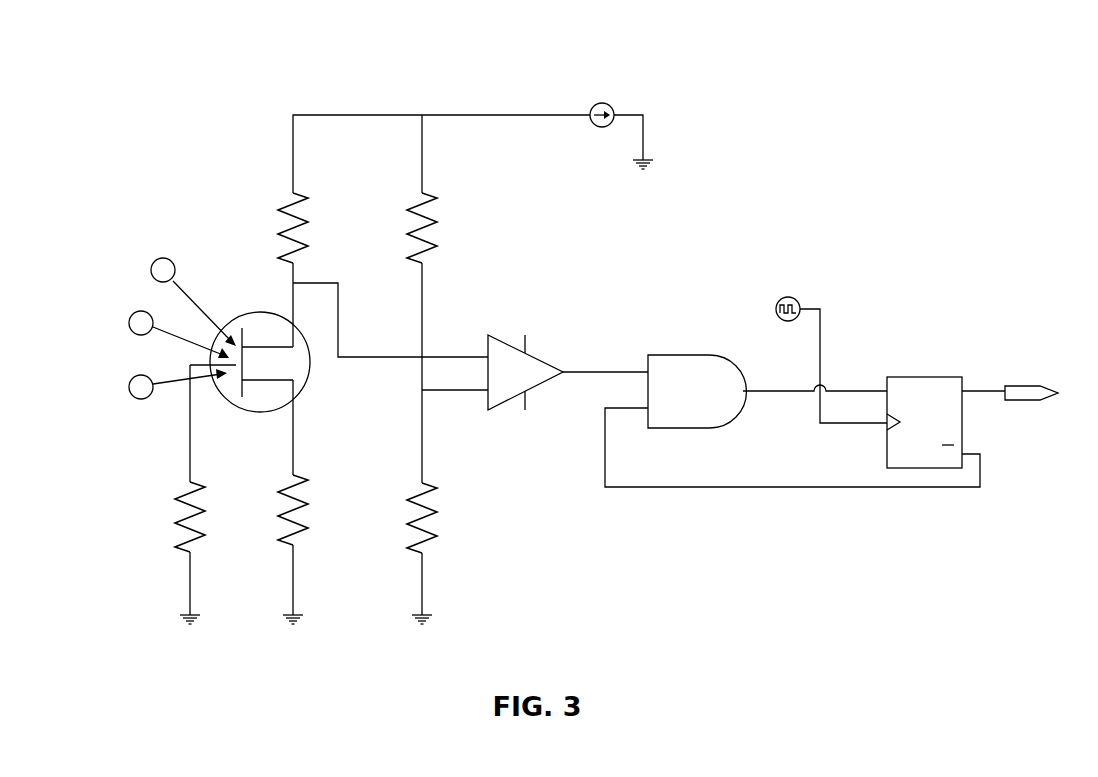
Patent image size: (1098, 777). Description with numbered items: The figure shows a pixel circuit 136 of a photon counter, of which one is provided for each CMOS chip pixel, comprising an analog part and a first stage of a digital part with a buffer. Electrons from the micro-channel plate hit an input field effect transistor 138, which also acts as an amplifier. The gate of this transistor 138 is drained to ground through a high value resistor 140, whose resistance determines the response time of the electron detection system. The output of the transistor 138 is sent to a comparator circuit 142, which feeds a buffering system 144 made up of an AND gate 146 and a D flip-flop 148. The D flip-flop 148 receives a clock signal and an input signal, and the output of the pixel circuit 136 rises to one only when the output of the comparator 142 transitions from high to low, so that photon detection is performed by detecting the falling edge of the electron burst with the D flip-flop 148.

The pixel circuit 136 is at (855, 79).
The input field effect transistor 138 is at (292, 318).
The high value resistor 140 is at (153, 510).
The comparator circuit 142 is at (553, 338).
The buffering system 144 is at (838, 272).
The AND gate 146 is at (677, 353).
The D flip-flop 148 is at (925, 375).